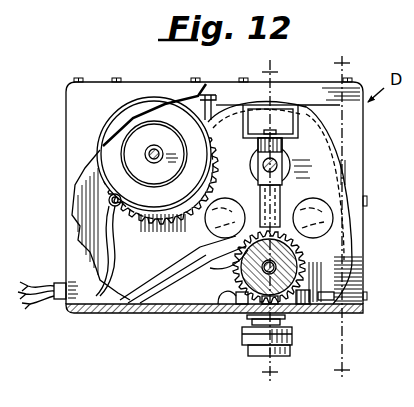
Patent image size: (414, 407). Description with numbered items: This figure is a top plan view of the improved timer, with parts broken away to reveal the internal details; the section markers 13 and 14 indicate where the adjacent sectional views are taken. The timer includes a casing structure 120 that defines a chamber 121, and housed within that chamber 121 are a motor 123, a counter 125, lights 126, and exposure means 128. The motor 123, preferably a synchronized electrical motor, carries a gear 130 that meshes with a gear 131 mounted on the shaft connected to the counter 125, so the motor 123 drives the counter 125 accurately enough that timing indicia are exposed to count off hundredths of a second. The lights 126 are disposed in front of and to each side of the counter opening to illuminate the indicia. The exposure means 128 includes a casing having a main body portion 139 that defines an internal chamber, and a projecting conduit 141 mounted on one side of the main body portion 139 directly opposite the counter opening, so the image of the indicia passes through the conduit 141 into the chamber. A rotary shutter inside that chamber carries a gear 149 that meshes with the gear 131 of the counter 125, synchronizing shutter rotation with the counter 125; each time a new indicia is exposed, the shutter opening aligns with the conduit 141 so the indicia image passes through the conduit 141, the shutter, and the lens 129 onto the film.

The casing structure 120 is at (134, 87).
The chamber 121 is at (148, 302).
The motor 123 is at (134, 140).
The counter 125 is at (299, 108).
The lights 126 is at (373, 218).
The exposure means 128 is at (322, 280).
The lens 129 is at (249, 347).
The gear 130 is at (213, 80).
The gear 131 is at (257, 108).
The main body portion 139 is at (212, 312).
The projecting conduit 141 is at (257, 198).
The gear 149 is at (244, 258).
The section line 13- 13 is at (338, 63).
The section line 14- 14 is at (268, 72).